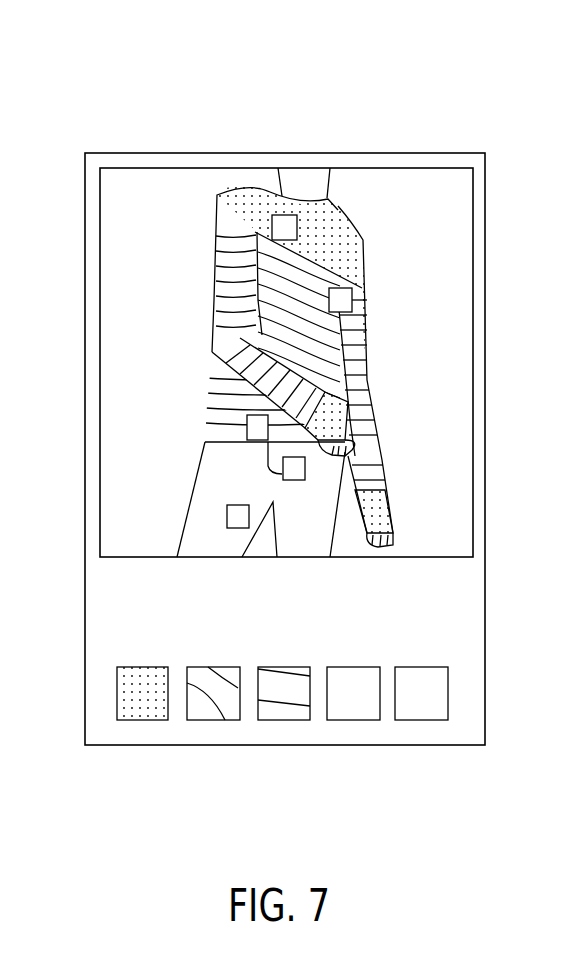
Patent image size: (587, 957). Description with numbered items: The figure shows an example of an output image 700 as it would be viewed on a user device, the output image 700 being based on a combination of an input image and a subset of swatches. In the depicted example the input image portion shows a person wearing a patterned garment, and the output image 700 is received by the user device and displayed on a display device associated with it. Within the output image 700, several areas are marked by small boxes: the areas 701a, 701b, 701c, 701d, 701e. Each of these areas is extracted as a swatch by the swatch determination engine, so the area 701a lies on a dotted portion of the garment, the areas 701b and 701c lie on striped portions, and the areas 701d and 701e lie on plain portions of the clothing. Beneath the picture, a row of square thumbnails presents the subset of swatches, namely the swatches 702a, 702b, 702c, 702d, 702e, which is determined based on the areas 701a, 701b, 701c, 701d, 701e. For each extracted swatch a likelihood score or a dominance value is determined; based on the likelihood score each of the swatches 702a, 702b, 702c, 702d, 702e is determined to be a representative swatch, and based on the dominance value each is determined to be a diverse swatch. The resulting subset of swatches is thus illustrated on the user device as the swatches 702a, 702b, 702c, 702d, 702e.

The output image 700 is at (150, 92).
The area 701a is at (300, 232).
The area 701b is at (362, 301).
The area 701c is at (248, 425).
The area 701d is at (283, 470).
The area 701e is at (226, 512).
The swatch 702a is at (115, 680).
The swatch 702b is at (203, 712).
The swatch 702c is at (280, 712).
The swatch 702d is at (353, 712).
The swatch 702e is at (430, 712).